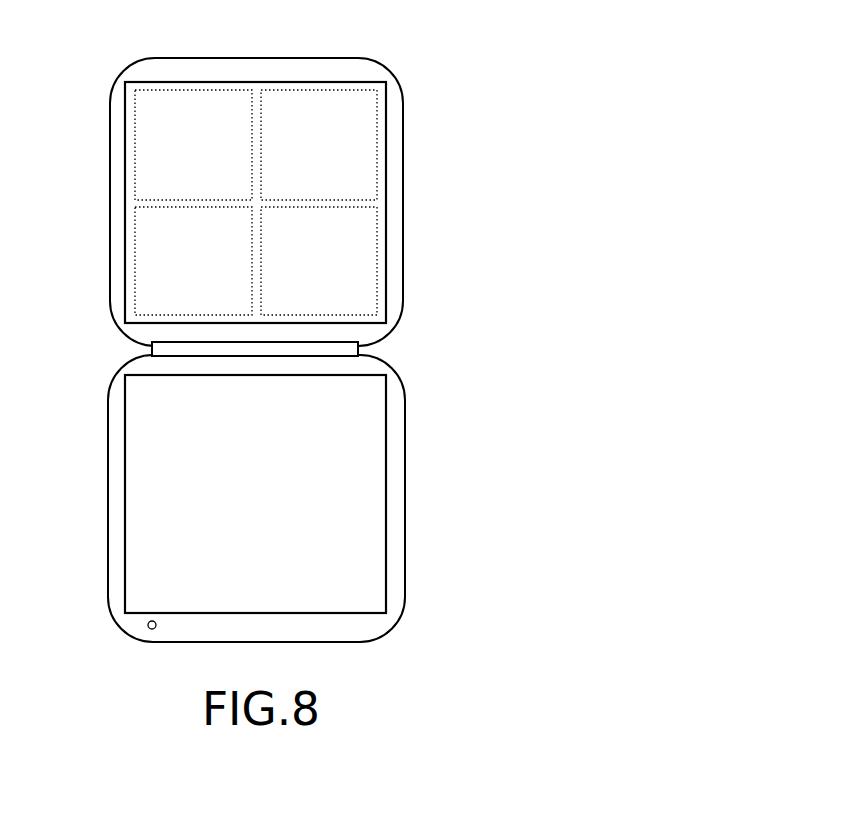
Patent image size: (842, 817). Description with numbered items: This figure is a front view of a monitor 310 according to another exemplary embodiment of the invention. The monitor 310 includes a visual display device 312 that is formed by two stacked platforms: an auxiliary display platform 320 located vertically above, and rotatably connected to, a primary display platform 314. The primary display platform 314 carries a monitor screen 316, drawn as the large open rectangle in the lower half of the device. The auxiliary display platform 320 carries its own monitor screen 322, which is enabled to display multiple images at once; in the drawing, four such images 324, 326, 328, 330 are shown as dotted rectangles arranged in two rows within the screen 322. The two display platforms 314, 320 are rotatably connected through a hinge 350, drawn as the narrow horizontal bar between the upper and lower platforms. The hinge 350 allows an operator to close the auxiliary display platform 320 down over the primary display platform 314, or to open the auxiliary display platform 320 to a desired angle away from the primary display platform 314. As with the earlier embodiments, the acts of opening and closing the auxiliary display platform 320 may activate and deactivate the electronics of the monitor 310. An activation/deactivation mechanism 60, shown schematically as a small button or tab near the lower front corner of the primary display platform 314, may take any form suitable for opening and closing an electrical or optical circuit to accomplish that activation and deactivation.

The monitor 310 is at (282, 350).
The visual display device 312 is at (397, 228).
The primary display platform 314 is at (118, 481).
The monitor screen 316 is at (355, 512).
The auxiliary display platform 320 is at (397, 156).
The monitor screen 322 is at (372, 318).
The image 324 is at (170, 158).
The image 326 is at (293, 158).
The image 328 is at (170, 272).
The image 330 is at (293, 272).
The hinge 350 is at (322, 349).
The activation/deactivation mechanism 60 is at (152, 631).